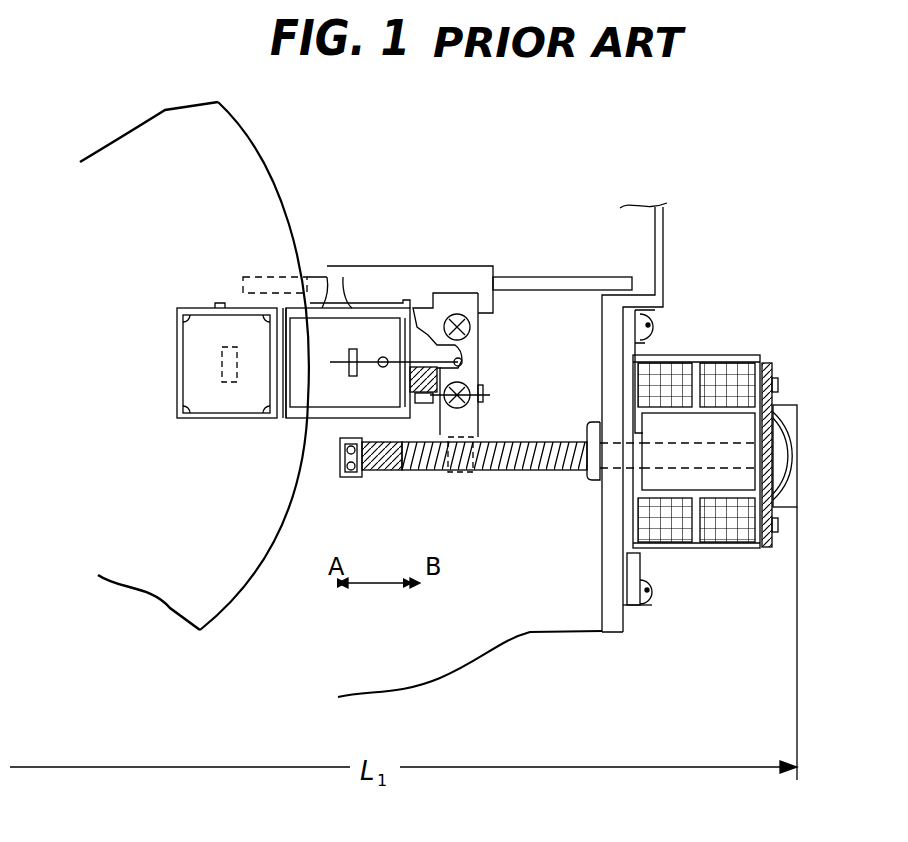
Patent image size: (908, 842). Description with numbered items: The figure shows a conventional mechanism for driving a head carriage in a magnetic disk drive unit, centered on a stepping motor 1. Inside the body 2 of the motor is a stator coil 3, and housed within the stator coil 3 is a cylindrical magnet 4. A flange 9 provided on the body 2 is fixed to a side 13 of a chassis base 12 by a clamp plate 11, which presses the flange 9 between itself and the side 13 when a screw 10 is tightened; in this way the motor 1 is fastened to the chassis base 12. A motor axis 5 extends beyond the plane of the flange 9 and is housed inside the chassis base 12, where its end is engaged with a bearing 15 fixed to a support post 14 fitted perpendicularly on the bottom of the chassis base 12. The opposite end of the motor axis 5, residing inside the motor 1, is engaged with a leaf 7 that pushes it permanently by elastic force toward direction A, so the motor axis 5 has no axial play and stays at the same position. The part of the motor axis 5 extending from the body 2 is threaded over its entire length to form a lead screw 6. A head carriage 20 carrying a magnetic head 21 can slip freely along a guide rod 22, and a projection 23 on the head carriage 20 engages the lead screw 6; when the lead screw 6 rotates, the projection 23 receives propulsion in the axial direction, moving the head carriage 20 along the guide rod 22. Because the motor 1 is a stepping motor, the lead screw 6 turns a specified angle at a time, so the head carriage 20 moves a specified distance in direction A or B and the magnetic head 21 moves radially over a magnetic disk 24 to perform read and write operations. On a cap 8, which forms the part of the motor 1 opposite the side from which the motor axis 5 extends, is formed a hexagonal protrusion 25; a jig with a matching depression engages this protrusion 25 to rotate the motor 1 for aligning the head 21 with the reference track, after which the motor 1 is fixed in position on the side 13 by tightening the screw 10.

The stepping motor 1 is at (753, 418).
The body 2 is at (706, 357).
The stator coil 3 is at (740, 367).
The cylindrical magnet 4 is at (678, 478).
The motor axis 5 is at (772, 412).
The lead screw 6 is at (506, 466).
The leaf 7 is at (795, 408).
The cap 8 is at (778, 525).
The flange 9 is at (625, 554).
The screw 10 is at (645, 603).
The clamp plate 11 is at (640, 563).
The chassis base 12 is at (509, 645).
The side 13 is at (612, 623).
The support post 14 is at (340, 478).
The bearing 15 is at (358, 478).
The head carriage 20 is at (240, 420).
The magnetic head 21 is at (225, 357).
The guide rod 22 is at (545, 285).
The projection 23 is at (458, 472).
The magnetic disk 24 is at (262, 210).
The protrusion 25 is at (797, 503).